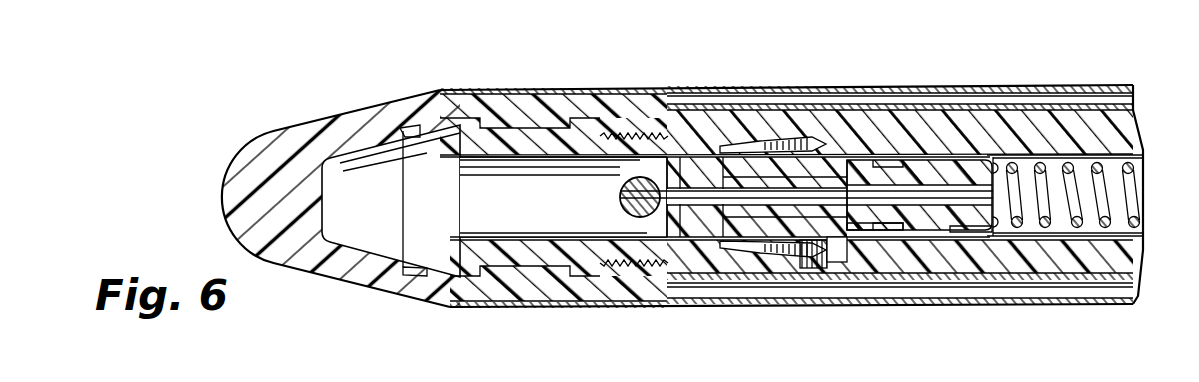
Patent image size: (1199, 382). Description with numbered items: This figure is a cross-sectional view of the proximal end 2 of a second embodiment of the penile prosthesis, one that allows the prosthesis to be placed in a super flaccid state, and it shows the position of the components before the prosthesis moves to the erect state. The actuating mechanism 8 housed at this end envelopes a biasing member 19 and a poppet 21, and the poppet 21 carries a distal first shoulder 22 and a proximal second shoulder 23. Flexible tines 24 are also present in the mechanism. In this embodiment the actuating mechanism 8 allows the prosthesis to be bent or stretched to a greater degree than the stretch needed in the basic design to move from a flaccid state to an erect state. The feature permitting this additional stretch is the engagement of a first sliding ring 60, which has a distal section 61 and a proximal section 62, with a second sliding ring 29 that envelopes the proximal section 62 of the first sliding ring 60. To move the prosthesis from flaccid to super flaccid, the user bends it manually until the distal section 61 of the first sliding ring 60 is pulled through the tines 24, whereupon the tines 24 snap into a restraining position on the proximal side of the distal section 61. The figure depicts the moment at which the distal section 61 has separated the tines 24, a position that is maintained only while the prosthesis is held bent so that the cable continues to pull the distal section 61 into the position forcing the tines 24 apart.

The proximal end 2 is at (298, 131).
The actuating mechanism 8 is at (873, 147).
The biasing member 19 is at (1140, 157).
The poppet 21 is at (940, 170).
The first shoulder 22 is at (967, 232).
The second shoulder 23 is at (900, 230).
The flexible tines 24 is at (727, 252).
The second sliding ring 29 is at (740, 157).
The first sliding ring 60 is at (843, 258).
The distal section 61 is at (805, 264).
The proximal section 62 is at (780, 252).